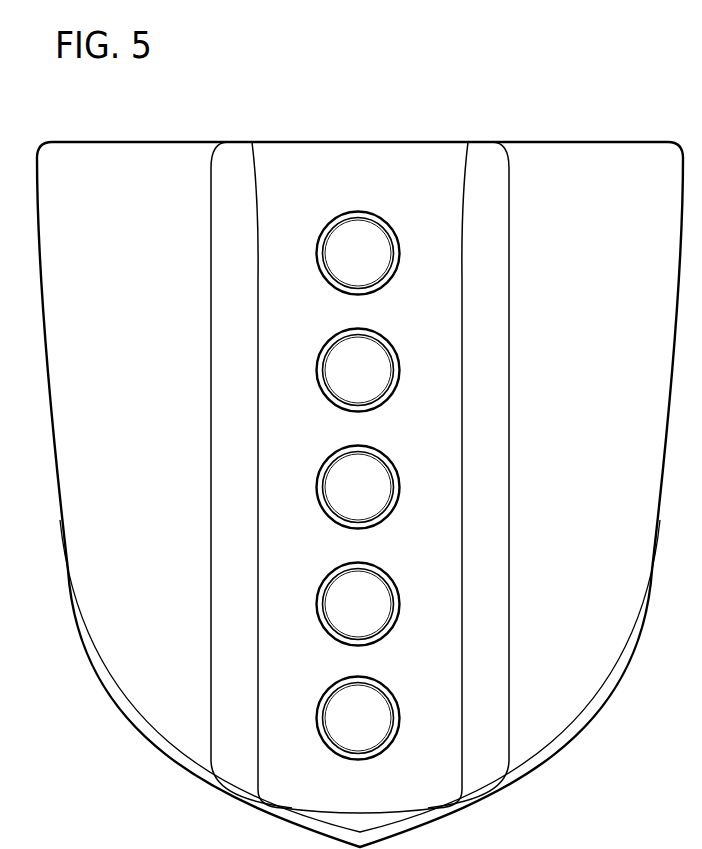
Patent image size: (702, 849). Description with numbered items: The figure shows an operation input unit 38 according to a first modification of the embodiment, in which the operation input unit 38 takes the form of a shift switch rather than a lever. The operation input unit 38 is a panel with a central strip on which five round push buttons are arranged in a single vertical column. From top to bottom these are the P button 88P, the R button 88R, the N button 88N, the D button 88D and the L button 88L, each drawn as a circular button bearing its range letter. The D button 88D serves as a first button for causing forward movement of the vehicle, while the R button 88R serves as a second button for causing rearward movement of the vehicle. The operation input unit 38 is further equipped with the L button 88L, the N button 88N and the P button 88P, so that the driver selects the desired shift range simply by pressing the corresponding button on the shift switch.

The operation input unit 38 is at (293, 122).
The P button 88P is at (383, 252).
The R button 88R is at (383, 369).
The N button 88N is at (383, 486).
The D button 88D is at (383, 604).
The L button 88L is at (383, 718).